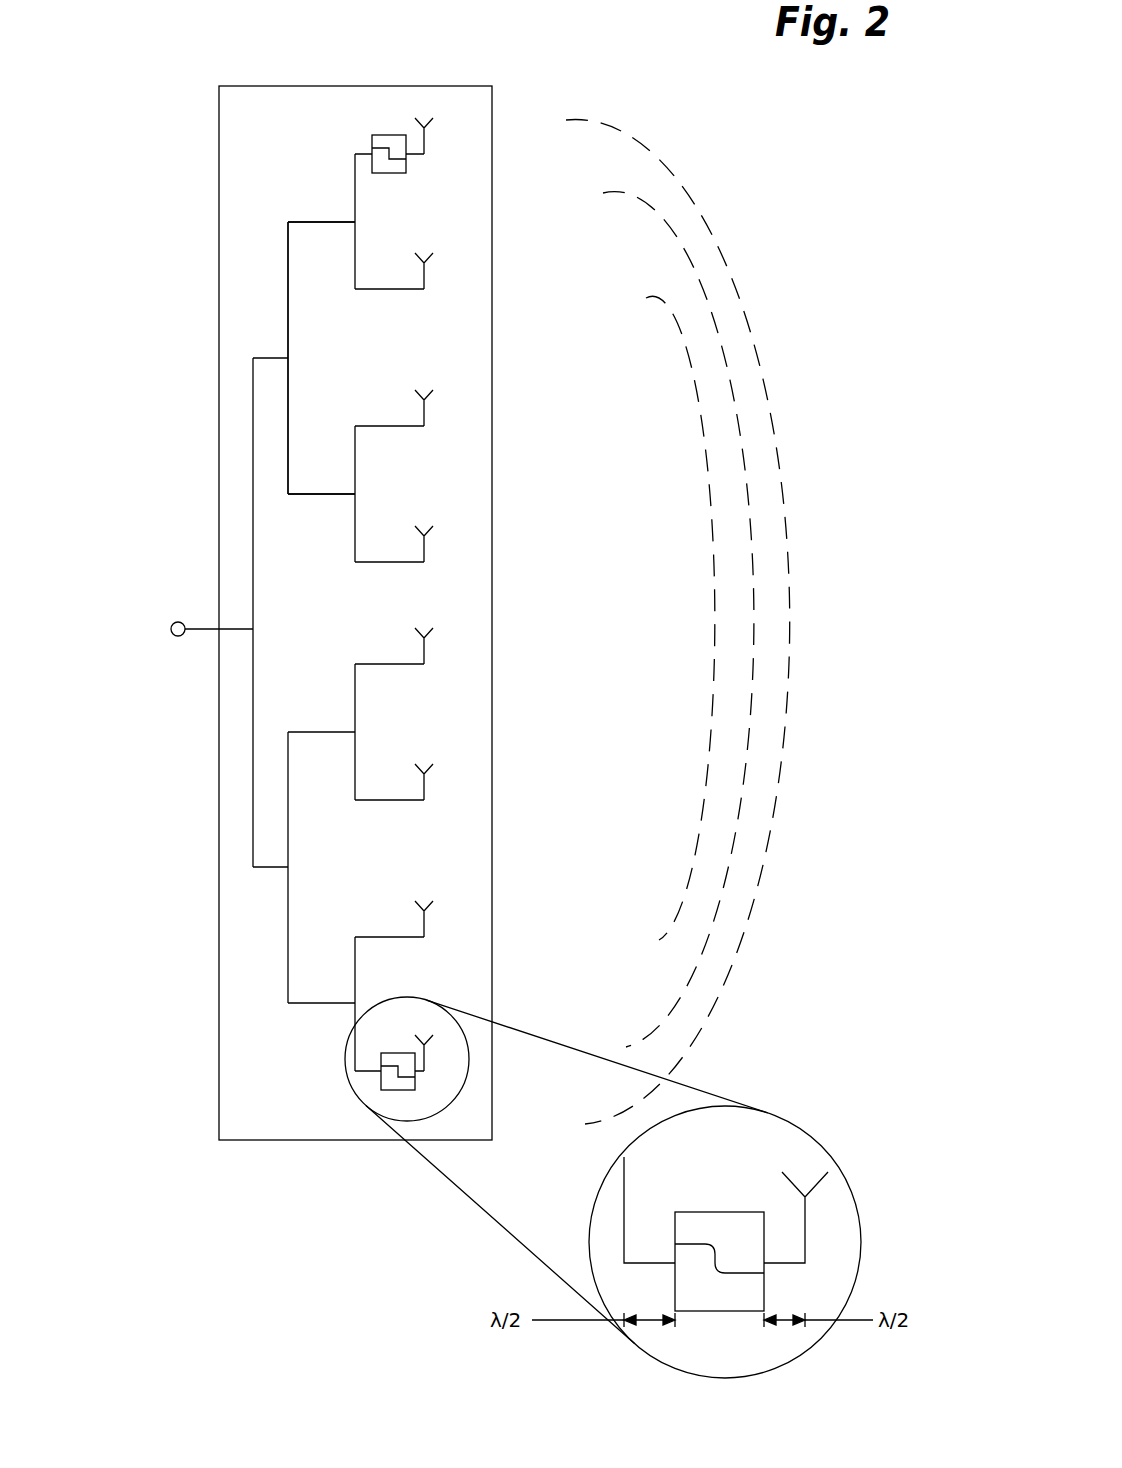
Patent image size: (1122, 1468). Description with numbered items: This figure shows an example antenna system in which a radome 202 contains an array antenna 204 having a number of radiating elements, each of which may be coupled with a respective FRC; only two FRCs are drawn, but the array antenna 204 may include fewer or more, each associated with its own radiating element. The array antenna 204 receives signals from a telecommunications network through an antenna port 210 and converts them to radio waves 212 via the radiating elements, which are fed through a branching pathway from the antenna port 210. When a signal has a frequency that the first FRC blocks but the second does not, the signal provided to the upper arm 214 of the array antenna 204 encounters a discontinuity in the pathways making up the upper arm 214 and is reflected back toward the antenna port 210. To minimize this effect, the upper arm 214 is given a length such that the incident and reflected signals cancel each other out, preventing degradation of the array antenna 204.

The radome 202 is at (219, 86).
The array antenna 204 is at (253, 417).
The upper arm 214 is at (288, 270).
The antenna port 210 is at (171, 629).
The radio waves 212 is at (892, 643).